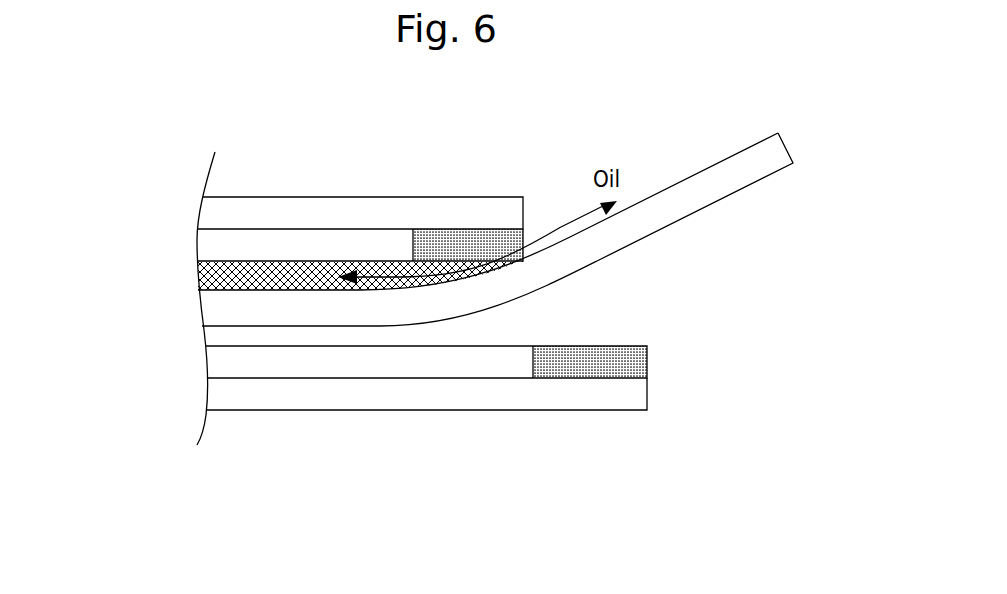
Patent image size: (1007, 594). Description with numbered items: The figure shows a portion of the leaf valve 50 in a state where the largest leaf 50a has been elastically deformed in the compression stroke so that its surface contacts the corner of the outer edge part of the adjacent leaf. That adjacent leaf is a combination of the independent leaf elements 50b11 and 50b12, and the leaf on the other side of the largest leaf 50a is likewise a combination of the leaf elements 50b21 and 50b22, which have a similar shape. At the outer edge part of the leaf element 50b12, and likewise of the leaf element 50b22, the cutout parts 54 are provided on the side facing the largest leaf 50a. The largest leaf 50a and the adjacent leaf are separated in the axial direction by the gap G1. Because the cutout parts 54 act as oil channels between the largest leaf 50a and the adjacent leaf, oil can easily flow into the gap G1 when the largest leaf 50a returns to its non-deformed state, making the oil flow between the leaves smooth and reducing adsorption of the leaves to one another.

The leaf valve 50 is at (693, 263).
The largest leaf 50a is at (747, 178).
The leaf element 50b11 is at (353, 210).
The leaf element 50b12 is at (212, 246).
The leaf element 50b21 is at (283, 394).
The leaf element 50b22 is at (230, 363).
The cutout part 54 is at (458, 242).
The gap G1 is at (285, 260).